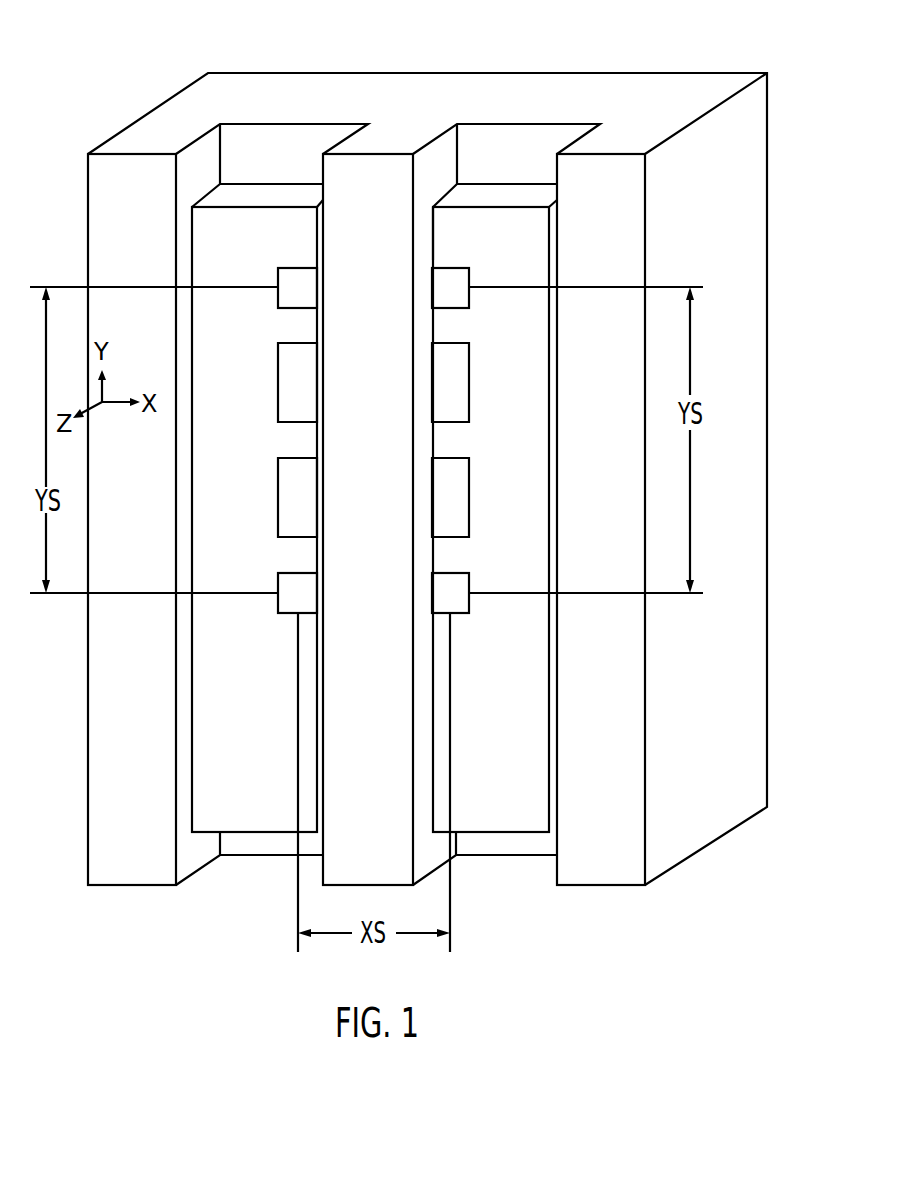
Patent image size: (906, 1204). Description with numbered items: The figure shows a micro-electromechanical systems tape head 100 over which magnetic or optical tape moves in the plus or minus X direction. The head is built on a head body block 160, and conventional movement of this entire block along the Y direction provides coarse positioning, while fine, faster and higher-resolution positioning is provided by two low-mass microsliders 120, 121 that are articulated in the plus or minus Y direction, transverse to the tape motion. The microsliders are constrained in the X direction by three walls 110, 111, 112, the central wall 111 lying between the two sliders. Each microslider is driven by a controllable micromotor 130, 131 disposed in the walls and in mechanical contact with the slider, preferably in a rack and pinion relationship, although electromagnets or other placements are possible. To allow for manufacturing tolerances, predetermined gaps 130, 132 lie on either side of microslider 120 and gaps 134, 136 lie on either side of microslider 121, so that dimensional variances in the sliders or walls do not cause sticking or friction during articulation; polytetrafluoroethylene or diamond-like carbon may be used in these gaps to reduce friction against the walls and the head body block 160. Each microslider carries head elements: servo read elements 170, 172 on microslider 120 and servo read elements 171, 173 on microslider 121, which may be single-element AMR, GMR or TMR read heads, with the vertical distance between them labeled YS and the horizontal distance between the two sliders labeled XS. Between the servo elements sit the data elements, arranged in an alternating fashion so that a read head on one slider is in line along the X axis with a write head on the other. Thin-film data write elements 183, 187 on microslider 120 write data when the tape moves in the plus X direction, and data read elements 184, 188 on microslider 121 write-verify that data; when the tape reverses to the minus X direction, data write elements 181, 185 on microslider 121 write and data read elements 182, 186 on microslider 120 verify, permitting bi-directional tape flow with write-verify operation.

The tape head 100 is at (270, 158).
The wall 110 is at (150, 196).
The wall 111 is at (387, 195).
The wall 112 is at (619, 195).
The microslider 120 is at (272, 246).
The microslider 121 is at (511, 245).
The micromotor / gap 130 is at (203, 177).
The micromotor 131 is at (597, 800).
The gap 132 is at (307, 195).
The gap 134 is at (417, 222).
The gap 136 is at (534, 195).
The head body block 160 is at (737, 108).
The servo read element 170 is at (278, 290).
The servo read element 171 is at (469, 290).
The servo read element 172 is at (278, 594).
The servo read element 173 is at (469, 594).
The data write element 181 is at (469, 366).
The data read element 182 is at (278, 366).
The data write element 183 is at (278, 403).
The data read element 184 is at (469, 404).
The data write element 185 is at (469, 480).
The data read element 186 is at (278, 479).
The data write element 187 is at (278, 517).
The data read element 188 is at (469, 518).